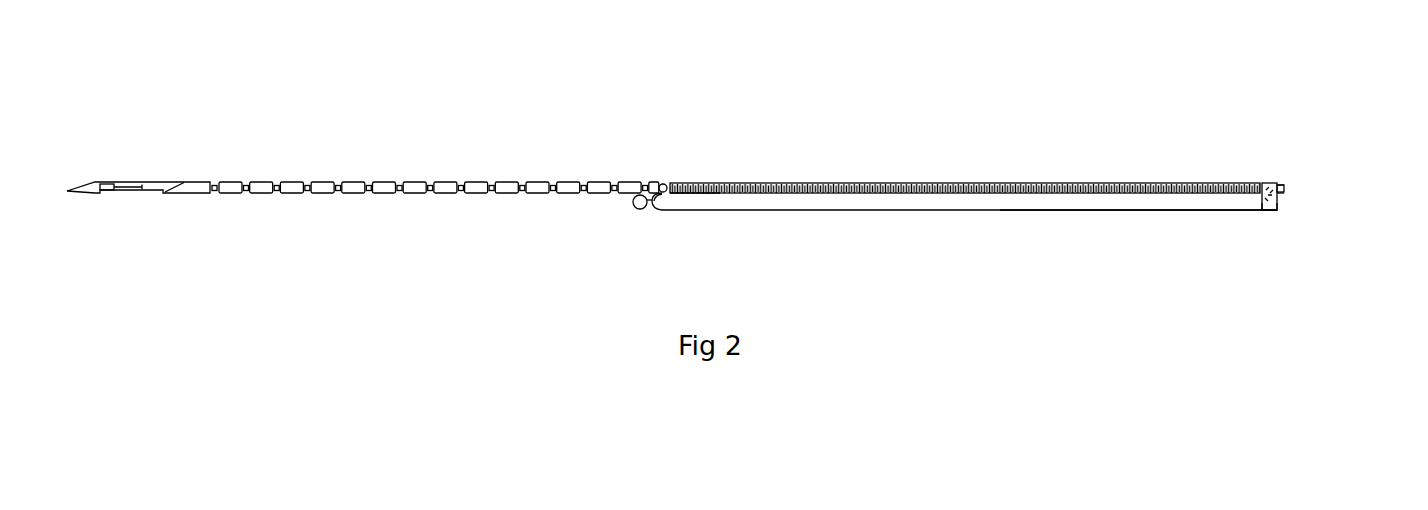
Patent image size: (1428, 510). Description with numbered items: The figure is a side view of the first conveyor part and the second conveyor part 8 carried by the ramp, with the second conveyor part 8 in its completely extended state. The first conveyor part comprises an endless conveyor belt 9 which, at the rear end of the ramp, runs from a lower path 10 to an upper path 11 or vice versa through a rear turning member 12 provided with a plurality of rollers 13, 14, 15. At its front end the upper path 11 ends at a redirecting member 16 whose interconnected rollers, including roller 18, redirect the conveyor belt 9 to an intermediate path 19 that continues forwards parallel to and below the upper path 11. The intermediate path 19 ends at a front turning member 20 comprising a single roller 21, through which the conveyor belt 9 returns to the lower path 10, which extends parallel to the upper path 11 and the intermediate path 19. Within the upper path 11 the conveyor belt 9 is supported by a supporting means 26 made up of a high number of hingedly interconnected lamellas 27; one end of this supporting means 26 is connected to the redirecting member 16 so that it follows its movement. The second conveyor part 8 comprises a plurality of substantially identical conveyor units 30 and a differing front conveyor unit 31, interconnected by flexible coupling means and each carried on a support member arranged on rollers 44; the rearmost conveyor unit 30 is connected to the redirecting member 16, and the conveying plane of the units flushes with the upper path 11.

The second conveyor part 8 is at (359, 176).
The endless conveyor belt 9 is at (899, 211).
The lower path 10 is at (1084, 211).
The upper path 11 is at (1266, 183).
The rear turning member 12 is at (1298, 197).
The roller 13 is at (1277, 210).
The roller 14 is at (1277, 185).
The roller 15 is at (1284, 188).
The redirecting member 16 is at (664, 180).
The roller 18 is at (694, 194).
The intermediate path 19 is at (657, 193).
The front turning member 20 is at (622, 200).
The single roller 21 is at (637, 207).
The supporting means 26 is at (841, 182).
The lamella 27 is at (1259, 200).
The conveyor unit 30 is at (272, 182).
The front conveyor unit 31 is at (157, 187).
The roller 44 is at (220, 194).